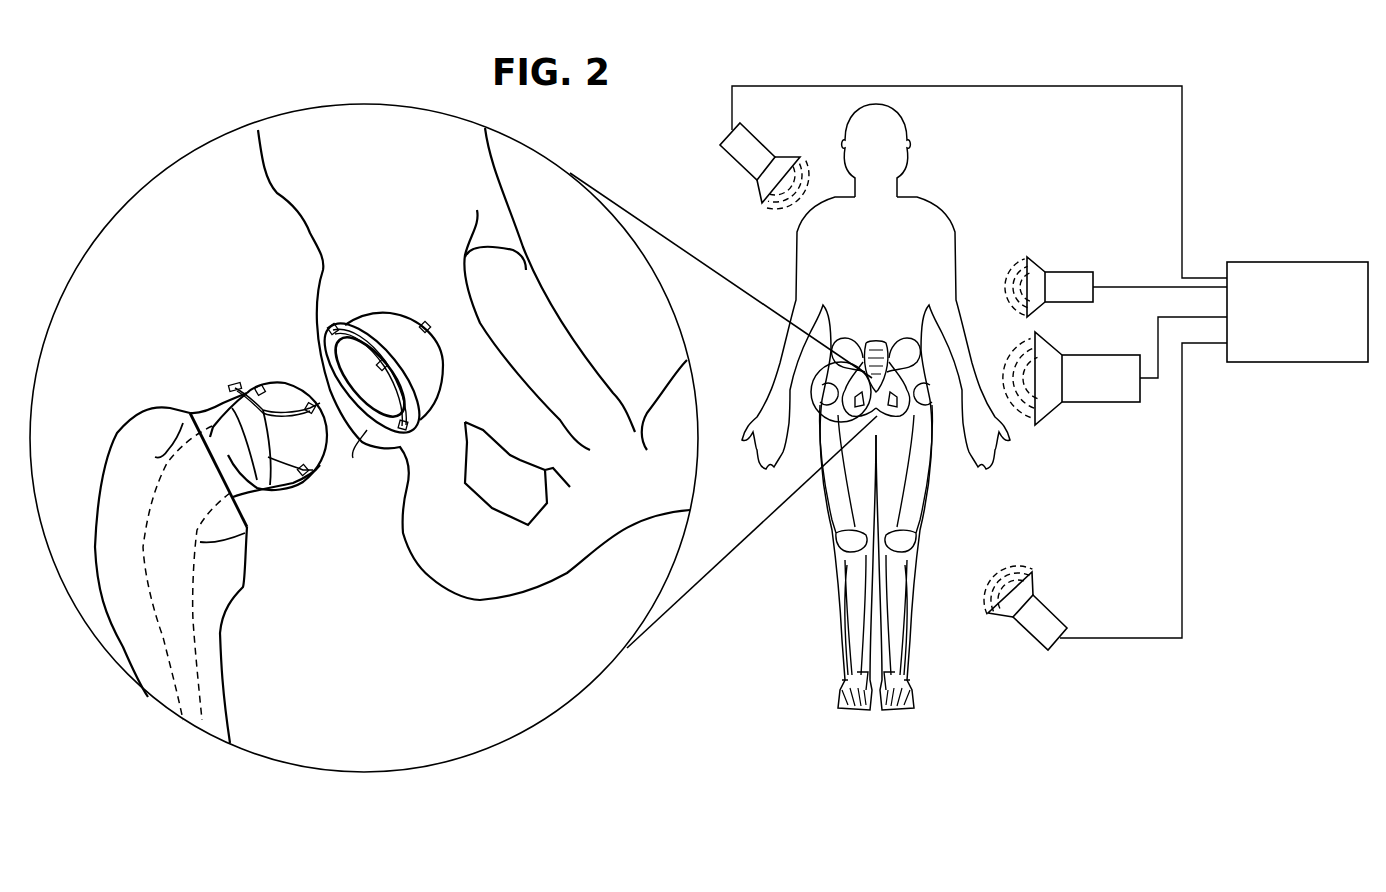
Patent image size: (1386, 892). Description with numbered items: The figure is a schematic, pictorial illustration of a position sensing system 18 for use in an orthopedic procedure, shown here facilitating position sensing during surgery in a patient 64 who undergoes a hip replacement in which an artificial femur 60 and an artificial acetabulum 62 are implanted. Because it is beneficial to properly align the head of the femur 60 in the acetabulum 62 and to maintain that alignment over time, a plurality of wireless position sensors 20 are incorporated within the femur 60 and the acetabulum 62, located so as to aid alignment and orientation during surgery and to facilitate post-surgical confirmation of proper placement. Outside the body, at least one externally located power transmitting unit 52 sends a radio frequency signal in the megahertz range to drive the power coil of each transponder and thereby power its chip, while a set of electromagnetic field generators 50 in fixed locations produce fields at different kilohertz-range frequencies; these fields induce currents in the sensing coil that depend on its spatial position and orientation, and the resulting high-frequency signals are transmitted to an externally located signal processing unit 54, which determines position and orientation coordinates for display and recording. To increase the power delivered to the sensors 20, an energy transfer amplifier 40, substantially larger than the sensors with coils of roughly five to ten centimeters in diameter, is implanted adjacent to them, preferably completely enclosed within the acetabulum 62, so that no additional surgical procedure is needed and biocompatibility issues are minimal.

The position sensing system 18 is at (453, 438).
The wireless position sensor 20 is at (333, 328).
The energy transfer amplifier 40 is at (390, 313).
The electromagnetic field generator 50 is at (760, 143).
The power transmitting unit 52 is at (1125, 403).
The signal processing unit 54 is at (1312, 262).
The artificial femur 60 is at (275, 383).
The artificial acetabulum 62 is at (353, 458).
The patient 64 is at (953, 210).